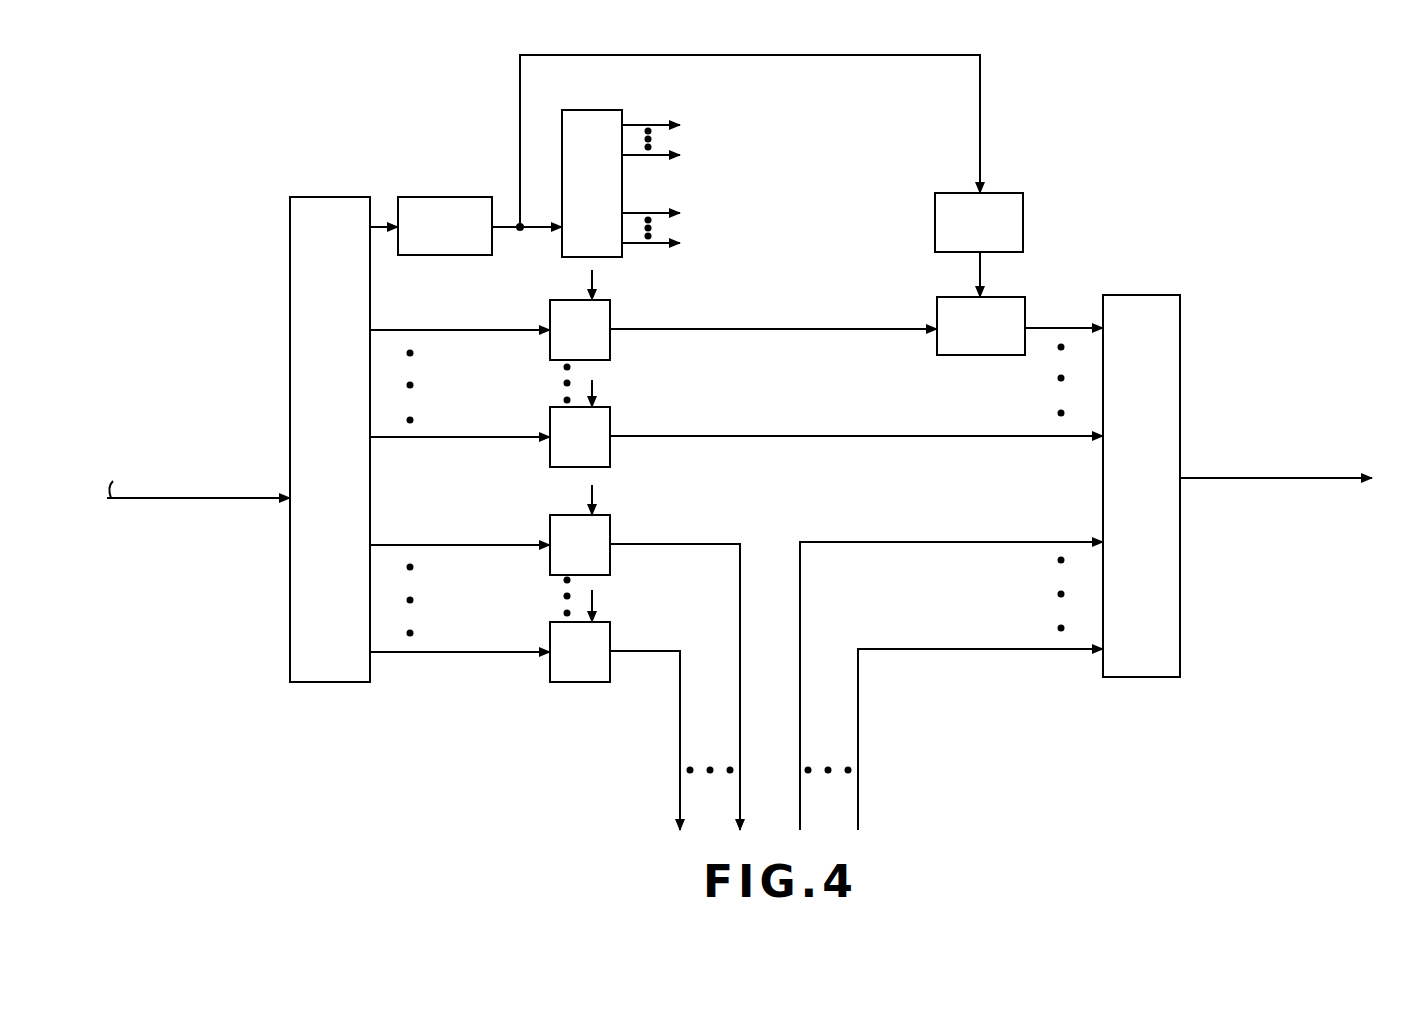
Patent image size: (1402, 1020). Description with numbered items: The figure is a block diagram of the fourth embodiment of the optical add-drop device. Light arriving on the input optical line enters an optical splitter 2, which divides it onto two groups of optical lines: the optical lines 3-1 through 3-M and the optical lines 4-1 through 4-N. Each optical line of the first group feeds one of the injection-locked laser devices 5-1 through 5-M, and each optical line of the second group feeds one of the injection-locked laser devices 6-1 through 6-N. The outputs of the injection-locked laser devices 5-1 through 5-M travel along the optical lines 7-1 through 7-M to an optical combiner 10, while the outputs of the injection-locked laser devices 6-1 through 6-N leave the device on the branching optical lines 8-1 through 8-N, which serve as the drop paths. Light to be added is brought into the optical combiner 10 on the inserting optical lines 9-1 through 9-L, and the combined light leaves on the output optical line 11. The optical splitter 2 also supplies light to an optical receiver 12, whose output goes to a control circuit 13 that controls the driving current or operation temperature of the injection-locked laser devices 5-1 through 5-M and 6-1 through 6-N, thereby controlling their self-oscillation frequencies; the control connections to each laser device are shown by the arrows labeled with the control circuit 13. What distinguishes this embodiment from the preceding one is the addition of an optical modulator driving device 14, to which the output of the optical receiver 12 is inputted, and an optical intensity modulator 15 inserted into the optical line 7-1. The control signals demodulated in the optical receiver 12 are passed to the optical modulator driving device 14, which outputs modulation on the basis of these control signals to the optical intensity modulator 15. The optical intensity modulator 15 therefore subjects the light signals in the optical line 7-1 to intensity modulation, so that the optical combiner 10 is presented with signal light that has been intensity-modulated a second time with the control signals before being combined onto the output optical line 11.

The optical splitter 2 is at (330, 197).
The optical receiver 12 is at (459, 197).
The control circuit 13 is at (611, 108).
The optical modulator driving device 14 is at (968, 192).
The optical intensity modulator 15 is at (967, 297).
The optical combiner 10 is at (1152, 295).
The output optical line 11 is at (1190, 478).
The optical line 3-1 is at (460, 347).
The optical line 3-M is at (460, 453).
The optical line 4-1 is at (460, 562).
The optical line 4-N is at (460, 668).
The injection-locked laser device 5-1 is at (550, 312).
The injection-locked laser device 5-M is at (550, 420).
The injection-locked laser device 6-1 is at (550, 528).
The injection-locked laser device 6-N is at (550, 635).
The optical line 7-1 is at (773, 346).
The optical line 7-M is at (856, 451).
The branching optical line 8-1 is at (675, 673).
The branching optical line 8-N is at (645, 727).
The inserting optical line 9-1 is at (951, 670).
The inserting optical line 9-L is at (980, 726).